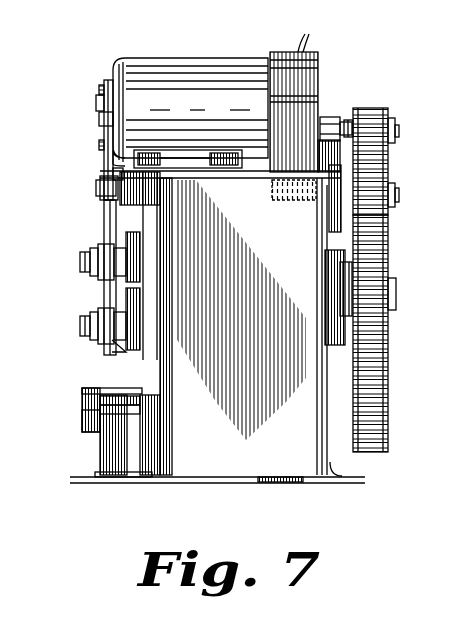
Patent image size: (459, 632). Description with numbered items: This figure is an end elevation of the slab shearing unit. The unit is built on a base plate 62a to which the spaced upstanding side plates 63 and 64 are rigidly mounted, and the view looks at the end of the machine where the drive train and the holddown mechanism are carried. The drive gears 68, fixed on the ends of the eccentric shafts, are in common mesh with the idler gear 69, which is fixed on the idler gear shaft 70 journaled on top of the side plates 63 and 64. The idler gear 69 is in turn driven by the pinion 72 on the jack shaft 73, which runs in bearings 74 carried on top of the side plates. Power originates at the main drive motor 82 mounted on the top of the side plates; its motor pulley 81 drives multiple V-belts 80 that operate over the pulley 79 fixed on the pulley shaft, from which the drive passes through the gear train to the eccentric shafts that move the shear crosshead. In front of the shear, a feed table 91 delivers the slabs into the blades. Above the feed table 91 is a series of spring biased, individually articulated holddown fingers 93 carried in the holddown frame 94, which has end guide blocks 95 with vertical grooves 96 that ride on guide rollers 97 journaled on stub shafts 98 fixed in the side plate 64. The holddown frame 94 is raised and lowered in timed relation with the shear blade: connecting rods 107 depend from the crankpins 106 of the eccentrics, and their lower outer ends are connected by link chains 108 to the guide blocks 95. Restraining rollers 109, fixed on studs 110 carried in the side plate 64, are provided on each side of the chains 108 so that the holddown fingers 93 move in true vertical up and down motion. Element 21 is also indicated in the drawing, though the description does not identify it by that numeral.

The frame member 21 is at (80, 418).
The base plate 62a is at (118, 482).
The side plate 63 is at (338, 480).
The side plate 64 is at (152, 474).
The drive gear 68 is at (388, 376).
The idler gear 69 is at (390, 164).
The idler gear shaft 70 is at (408, 188).
The pinion 72 is at (402, 112).
The jack shaft 73 is at (399, 132).
The bearings 74 is at (348, 120).
The pulley 79 is at (318, 60).
The multiple V-belts 80 is at (310, 35).
The motor pulley 81 is at (318, 102).
The main drive motor 82 is at (180, 58).
The feed table 91 is at (84, 388).
The holddown fingers 93 is at (120, 352).
The holddown frame 94 is at (96, 300).
The end guide blocks 95 is at (100, 222).
The vertical grooves 96 is at (98, 210).
The guide rollers 97 is at (96, 248).
The stub shafts 98 is at (78, 262).
The crankpins 106 is at (98, 100).
The connecting rods 107 is at (101, 117).
The link chains 108 is at (101, 145).
The restraining rollers 109 is at (106, 178).
The studs 110 is at (96, 187).